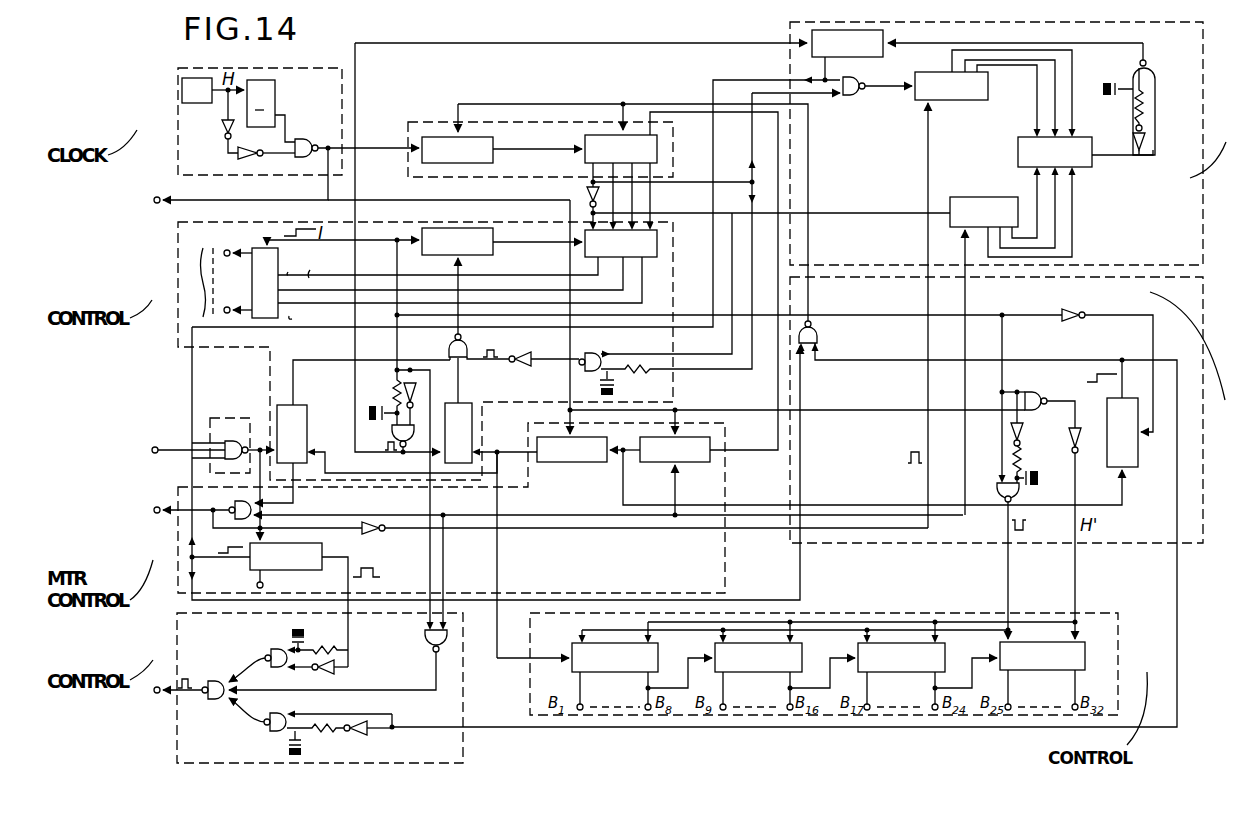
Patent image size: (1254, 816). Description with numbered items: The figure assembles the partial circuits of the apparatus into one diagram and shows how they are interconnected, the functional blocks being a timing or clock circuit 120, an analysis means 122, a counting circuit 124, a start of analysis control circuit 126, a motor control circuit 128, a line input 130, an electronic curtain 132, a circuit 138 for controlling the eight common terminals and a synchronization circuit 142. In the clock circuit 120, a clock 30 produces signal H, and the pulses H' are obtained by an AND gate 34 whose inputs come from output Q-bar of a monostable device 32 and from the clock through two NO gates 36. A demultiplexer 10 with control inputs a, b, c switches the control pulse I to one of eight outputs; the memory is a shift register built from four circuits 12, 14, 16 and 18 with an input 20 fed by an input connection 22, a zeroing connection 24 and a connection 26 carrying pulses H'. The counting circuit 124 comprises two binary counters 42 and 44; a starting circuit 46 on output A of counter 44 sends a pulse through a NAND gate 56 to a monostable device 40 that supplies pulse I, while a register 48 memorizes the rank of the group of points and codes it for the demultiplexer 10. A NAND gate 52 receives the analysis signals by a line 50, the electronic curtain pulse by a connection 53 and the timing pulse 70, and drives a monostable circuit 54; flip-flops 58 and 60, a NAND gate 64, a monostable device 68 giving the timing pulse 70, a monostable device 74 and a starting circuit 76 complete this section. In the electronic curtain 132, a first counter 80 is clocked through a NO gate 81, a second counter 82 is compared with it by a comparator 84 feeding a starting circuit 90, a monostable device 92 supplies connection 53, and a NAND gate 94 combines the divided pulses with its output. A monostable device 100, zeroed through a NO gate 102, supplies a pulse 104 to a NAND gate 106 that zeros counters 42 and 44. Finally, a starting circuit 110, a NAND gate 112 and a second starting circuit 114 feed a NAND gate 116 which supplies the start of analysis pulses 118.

The demultiplexer 10 is at (259, 283).
The shift register circuit 12 is at (642, 676).
The shift register circuit 14 is at (785, 676).
The shift register circuit 16 is at (927, 676).
The shift register circuit 18 is at (1042, 676).
The memory input 20 is at (572, 656).
The input connection 22 is at (498, 497).
The zeroing connection 24 is at (1005, 574).
The connection 26 is at (1078, 571).
The clock 30 is at (197, 90).
The monostable device 32 is at (261, 103).
The AND gate 34 is at (303, 137).
The NO gates 36 is at (226, 138).
The monostable device 40 is at (457, 241).
The binary counter 42 is at (457, 150).
The binary counter 44 is at (681, 281).
The starting circuit 46 is at (622, 357).
The register 48 is at (467, 266).
The line 50 is at (187, 438).
The NAND gate 52 is at (221, 440).
The connection 53 is at (186, 370).
The monostable circuit 54 is at (376, 431).
The NAND gate 56 is at (448, 344).
The flip-flop 58 is at (660, 462).
The flip-flop 60 is at (781, 435).
The NAND gate 64 is at (558, 510).
The monostable device 68 is at (269, 602).
The timing pulse 70 is at (289, 556).
The monostable device 74 is at (491, 410).
The starting circuit 76 is at (391, 387).
The first counter 80 is at (984, 356).
The NO gate 81 is at (589, 189).
The second counter 82 is at (995, 289).
The comparator 84 is at (1070, 197).
The starting circuit 90 is at (1127, 101).
The monostable device 92 is at (977, 43).
The NAND gate 94 is at (852, 98).
The monostable device 100 is at (1125, 413).
The NO gate 102 is at (1077, 370).
The pulse 104 is at (1057, 408).
The NAND gate 106 is at (820, 334).
The starting circuit 110 is at (266, 648).
The NAND gate 112 is at (425, 636).
The starting circuit 114 is at (268, 736).
The NAND gate 116 is at (211, 701).
The start of analysis pulses 118 is at (196, 671).
The timing or clock circuit 120 is at (178, 118).
The analysis means 122 is at (347, 175).
The counting circuit 124 is at (408, 127).
The start of analysis control circuit 126 is at (177, 650).
The motor control circuit 128 is at (177, 548).
The line input 130 is at (232, 418).
The electronic curtain 132 is at (1200, 128).
The circuit for controlling the common terminals 138 is at (178, 290).
The synchronization circuit 142 is at (1198, 410).